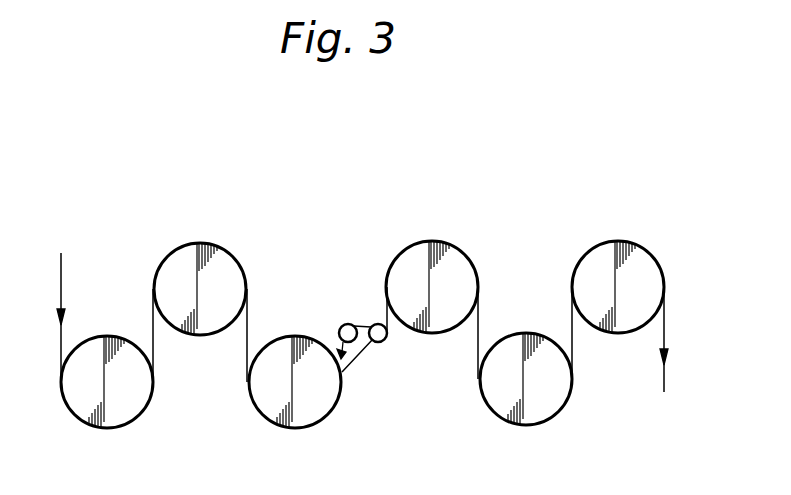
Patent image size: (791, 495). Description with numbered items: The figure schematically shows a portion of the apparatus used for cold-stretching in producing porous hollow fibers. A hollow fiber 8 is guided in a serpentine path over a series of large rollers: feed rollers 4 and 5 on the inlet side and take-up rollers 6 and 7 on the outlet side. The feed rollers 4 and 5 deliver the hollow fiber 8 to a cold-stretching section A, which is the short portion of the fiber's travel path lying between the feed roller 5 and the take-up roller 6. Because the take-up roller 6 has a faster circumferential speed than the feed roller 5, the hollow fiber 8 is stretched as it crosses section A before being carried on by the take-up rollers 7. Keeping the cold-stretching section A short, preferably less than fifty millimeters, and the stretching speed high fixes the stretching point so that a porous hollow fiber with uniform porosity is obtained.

The feed rollers for cold-stretching 4 is at (205, 245).
The feed roller for cold-stretching 5 is at (348, 324).
The take-up roller for cold-stretching 6 is at (385, 341).
The take-up rollers for cold-stretching 7 is at (440, 241).
The hollow fiber 8 is at (247, 313).
The cold-stretching section A is at (340, 352).